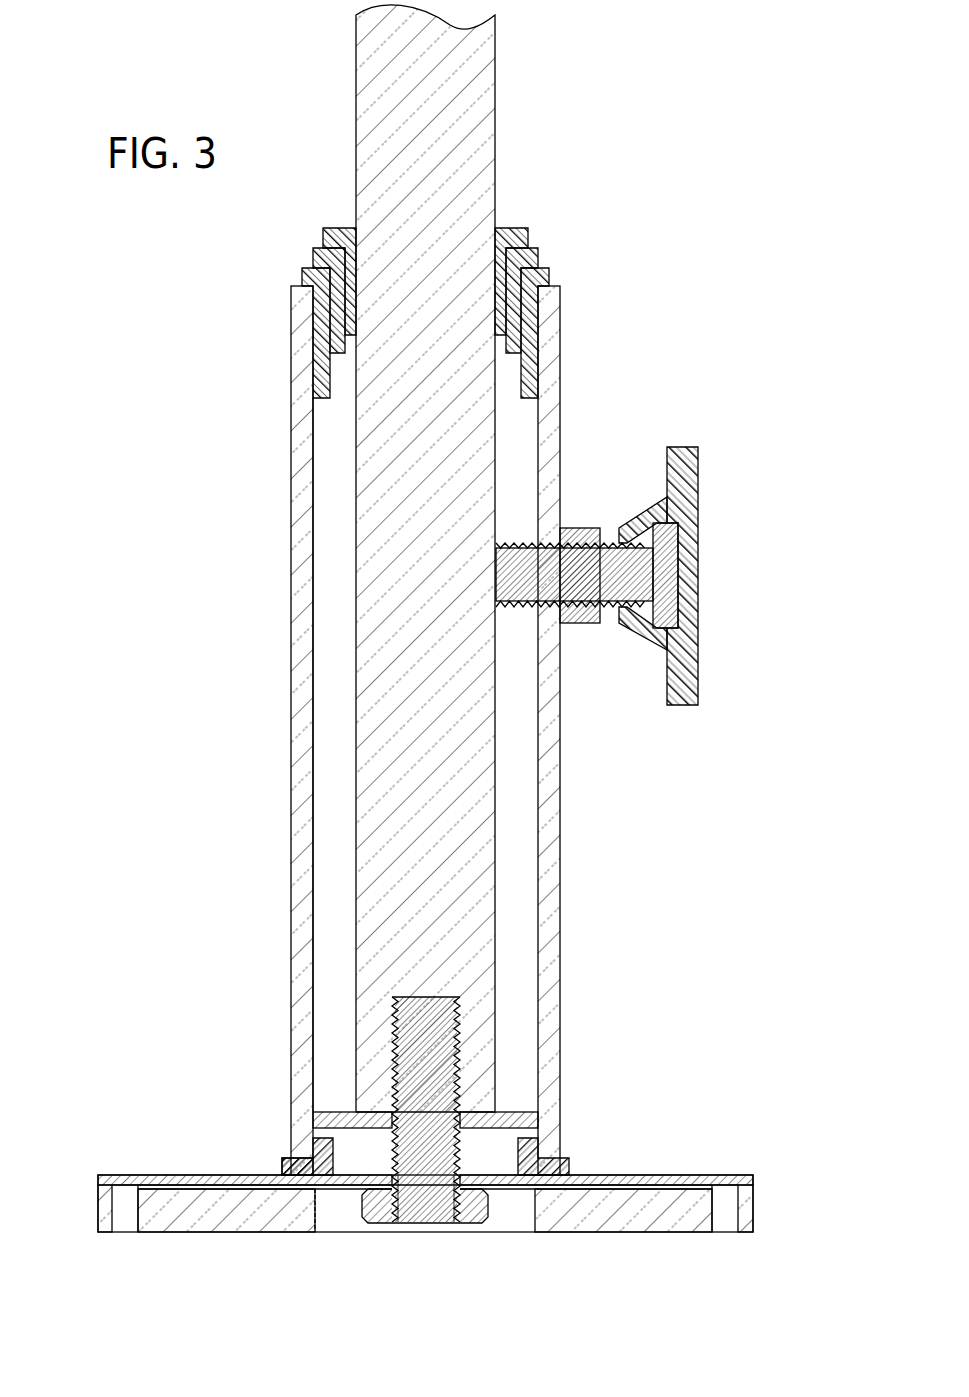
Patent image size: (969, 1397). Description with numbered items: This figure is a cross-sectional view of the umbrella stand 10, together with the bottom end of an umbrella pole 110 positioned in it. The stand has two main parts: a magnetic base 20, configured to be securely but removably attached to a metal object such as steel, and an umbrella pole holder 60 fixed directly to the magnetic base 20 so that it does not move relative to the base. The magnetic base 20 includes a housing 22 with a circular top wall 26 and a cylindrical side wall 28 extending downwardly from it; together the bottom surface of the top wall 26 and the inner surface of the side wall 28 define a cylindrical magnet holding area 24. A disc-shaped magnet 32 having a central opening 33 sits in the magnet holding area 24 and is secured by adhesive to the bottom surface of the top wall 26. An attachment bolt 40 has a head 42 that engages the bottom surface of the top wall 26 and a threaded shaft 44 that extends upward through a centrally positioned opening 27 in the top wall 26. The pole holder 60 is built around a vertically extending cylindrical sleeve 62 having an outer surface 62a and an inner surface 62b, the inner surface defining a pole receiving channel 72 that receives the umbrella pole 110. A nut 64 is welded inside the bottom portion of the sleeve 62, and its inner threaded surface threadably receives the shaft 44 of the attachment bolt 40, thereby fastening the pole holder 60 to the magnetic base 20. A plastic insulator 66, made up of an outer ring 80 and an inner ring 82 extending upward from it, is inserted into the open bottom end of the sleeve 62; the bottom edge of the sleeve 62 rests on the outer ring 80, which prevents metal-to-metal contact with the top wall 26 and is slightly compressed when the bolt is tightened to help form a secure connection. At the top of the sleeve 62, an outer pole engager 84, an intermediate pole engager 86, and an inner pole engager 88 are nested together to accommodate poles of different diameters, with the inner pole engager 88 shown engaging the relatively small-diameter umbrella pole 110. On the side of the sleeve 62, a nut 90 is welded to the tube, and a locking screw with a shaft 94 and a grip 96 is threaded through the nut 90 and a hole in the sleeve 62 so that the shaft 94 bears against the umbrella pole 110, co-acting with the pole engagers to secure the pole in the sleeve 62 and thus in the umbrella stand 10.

The umbrella stand 10 is at (205, 588).
The magnetic base 20 is at (78, 1193).
The housing 22 is at (108, 1170).
The magnet holding area 24 is at (343, 1212).
The top wall 26 is at (156, 1180).
The opening 27 is at (448, 1190).
The side wall 28 is at (105, 1218).
The magnet 32 is at (685, 1220).
The centrally positioned opening 33 is at (323, 1210).
The attachment bolt 40 is at (462, 1077).
The head 42 is at (420, 1215).
The threaded shaft 44 is at (432, 1020).
The umbrella pole holder 60 is at (288, 847).
The sleeve 62 is at (552, 352).
The outer surface 62a is at (560, 828).
The inner surface 62b is at (314, 796).
The nut 64 is at (520, 1120).
The insulator 66 is at (278, 1169).
The pole receiving channel 72 is at (335, 465).
The outer ring 80 is at (570, 1165).
The inner ring 82 is at (325, 1158).
The outer pole engager 84 is at (551, 283).
The intermediate pole engager 86 is at (528, 266).
The inner pole engager 88 is at (512, 228).
The nut 90 is at (582, 625).
The shaft 94 is at (662, 567).
The grip 96 is at (682, 605).
The umbrella pole 110 is at (473, 77).